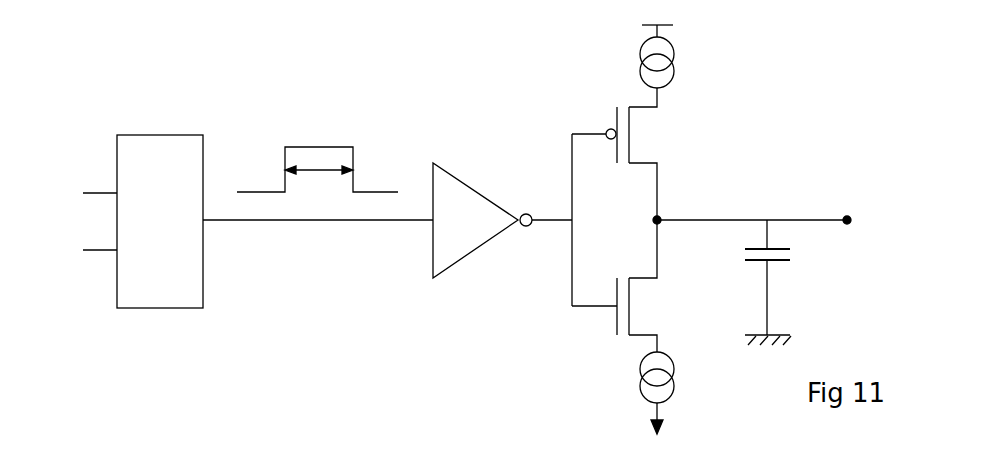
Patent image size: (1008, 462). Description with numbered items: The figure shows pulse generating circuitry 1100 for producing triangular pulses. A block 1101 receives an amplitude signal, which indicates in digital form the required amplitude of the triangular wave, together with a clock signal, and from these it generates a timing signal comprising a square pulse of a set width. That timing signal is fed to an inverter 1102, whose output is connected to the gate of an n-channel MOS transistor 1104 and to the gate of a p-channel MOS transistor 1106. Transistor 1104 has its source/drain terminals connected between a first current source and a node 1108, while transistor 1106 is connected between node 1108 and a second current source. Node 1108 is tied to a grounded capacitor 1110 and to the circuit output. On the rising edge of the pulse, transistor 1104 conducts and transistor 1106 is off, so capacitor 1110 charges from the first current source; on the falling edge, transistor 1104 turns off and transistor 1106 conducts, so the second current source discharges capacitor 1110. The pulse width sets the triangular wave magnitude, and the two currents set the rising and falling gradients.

The pulse generating circuitry 1100 is at (470, 229).
The block 1101 is at (157, 147).
The inverter 1102 is at (470, 210).
The n-channel MOS transistor 1104 is at (642, 135).
The p-channel MOS transistor 1106 is at (642, 303).
The node 1108 is at (663, 215).
The capacitor 1110 is at (790, 252).